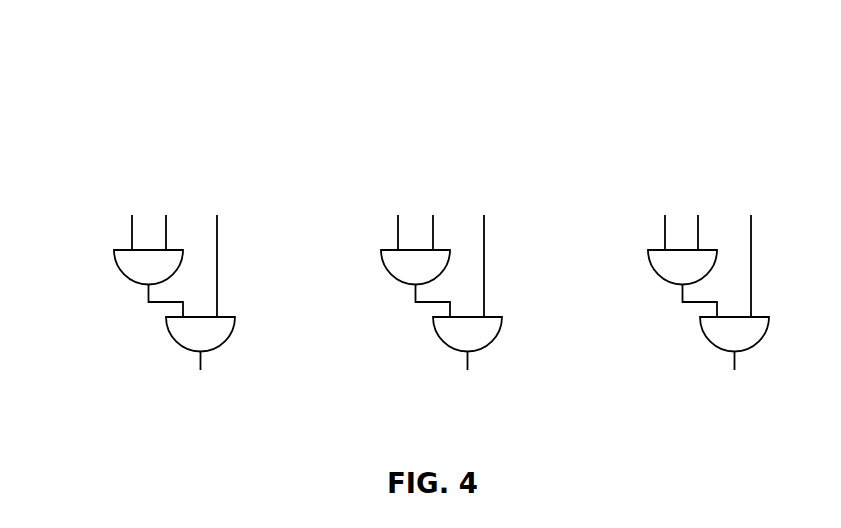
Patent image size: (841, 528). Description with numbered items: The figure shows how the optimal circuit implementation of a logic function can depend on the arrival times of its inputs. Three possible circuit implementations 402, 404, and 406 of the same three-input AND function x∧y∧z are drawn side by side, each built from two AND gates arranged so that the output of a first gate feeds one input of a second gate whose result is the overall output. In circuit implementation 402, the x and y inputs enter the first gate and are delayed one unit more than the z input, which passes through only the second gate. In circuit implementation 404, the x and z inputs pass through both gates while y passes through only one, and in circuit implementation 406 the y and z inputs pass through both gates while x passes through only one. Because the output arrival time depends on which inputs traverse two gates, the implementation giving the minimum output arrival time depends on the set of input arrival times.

The circuit implementation 402 is at (114, 160).
The circuit implementation 404 is at (385, 160).
The circuit implementation 406 is at (651, 160).